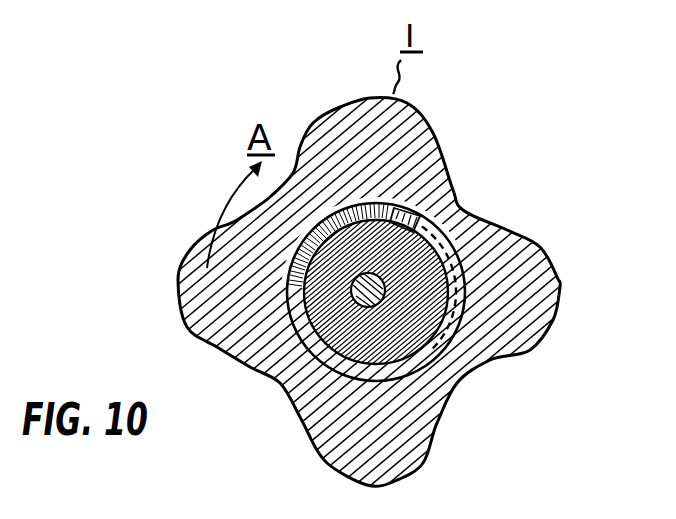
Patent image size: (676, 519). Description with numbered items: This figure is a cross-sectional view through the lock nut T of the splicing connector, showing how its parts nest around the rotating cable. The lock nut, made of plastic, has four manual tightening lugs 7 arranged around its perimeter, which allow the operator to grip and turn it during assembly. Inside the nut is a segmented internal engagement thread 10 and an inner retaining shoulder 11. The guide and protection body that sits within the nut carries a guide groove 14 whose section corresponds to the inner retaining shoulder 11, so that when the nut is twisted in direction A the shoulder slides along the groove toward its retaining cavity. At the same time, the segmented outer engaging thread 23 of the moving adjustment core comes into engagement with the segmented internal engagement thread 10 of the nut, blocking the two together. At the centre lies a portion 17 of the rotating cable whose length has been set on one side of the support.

The manual tightening lugs 7 is at (433, 133).
The portion of rotating cable 17 is at (300, 417).
The segmented internal engagement thread 10 is at (460, 260).
The segmented outer engaging thread 23 is at (286, 380).
The guide groove 14 is at (396, 205).
The inner retaining shoulder 11 is at (352, 291).